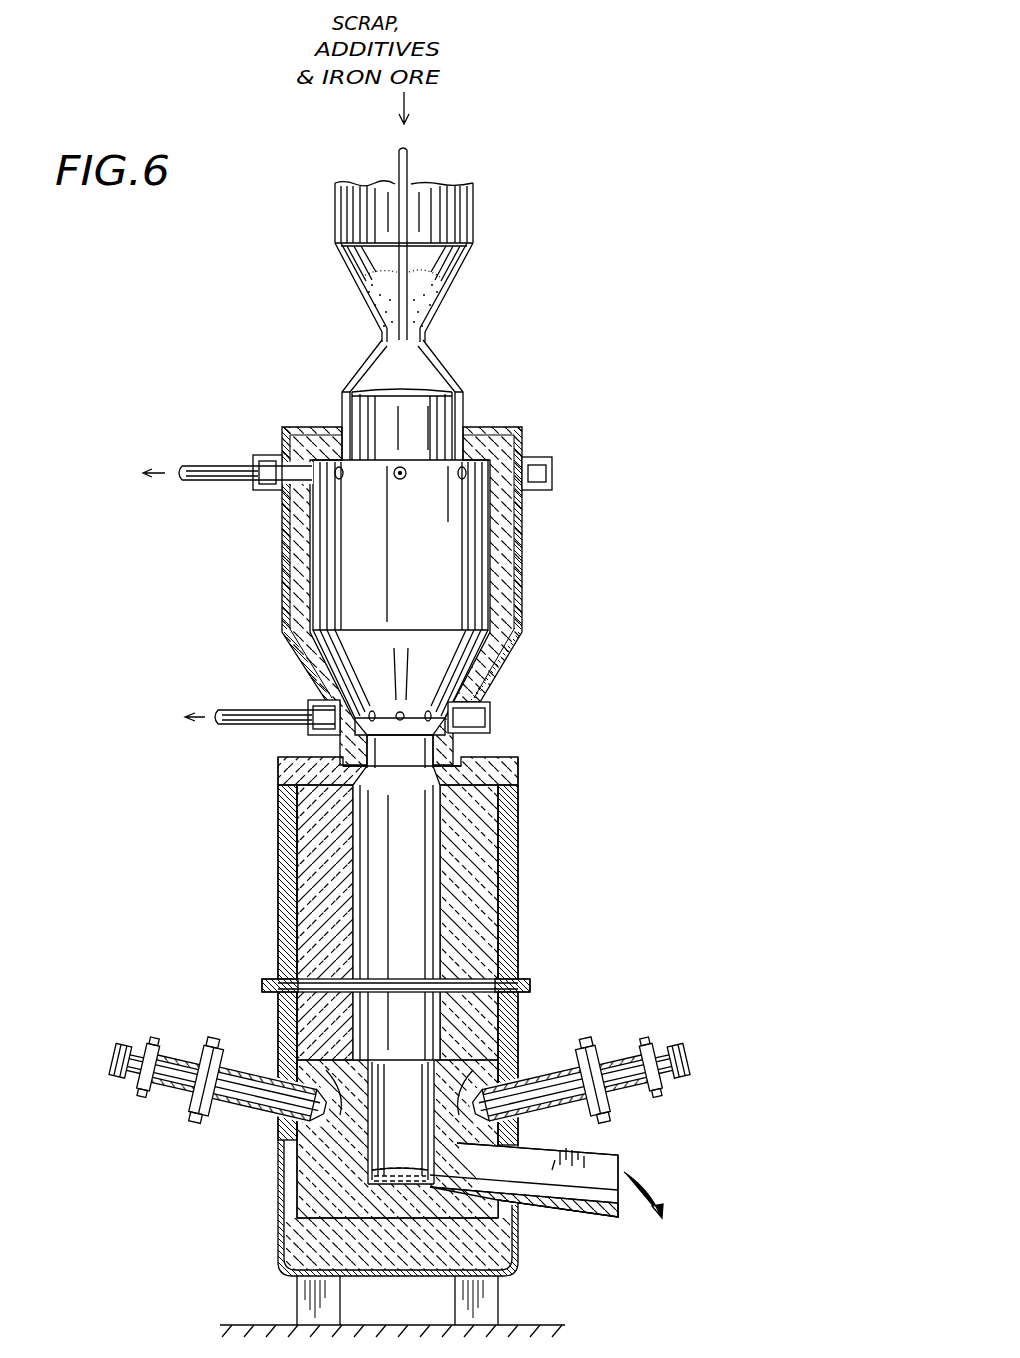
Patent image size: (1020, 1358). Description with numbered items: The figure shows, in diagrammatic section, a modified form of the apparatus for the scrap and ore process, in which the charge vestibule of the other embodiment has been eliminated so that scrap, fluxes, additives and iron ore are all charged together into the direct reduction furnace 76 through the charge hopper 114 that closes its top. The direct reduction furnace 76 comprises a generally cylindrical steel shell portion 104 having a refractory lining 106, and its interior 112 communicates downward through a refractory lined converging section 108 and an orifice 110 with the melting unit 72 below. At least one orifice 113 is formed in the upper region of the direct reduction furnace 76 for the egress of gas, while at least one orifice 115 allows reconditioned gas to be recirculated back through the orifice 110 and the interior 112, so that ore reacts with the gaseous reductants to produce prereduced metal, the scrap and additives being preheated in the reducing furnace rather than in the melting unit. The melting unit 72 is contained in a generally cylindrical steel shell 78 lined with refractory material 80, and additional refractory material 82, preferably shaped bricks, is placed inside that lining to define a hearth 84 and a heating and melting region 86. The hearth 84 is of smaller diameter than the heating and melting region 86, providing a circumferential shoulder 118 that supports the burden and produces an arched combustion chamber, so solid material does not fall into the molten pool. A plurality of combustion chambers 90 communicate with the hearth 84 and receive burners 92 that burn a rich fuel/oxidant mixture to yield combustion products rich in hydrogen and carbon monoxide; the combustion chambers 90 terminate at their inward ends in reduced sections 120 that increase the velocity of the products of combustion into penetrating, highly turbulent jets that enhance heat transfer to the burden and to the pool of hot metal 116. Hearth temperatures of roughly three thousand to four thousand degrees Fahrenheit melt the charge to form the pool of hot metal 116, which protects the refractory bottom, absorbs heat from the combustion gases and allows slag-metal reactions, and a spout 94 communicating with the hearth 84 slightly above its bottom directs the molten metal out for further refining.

The melting unit 72 is at (394, 1047).
The direct reduction furnace 76 is at (351, 597).
The cylindrical steel shell 78 is at (280, 919).
The refractory material 80 is at (288, 885).
The additional refractory material 82 is at (318, 940).
The hearth 84 is at (325, 1111).
The heating and melting region 86 is at (416, 886).
The combustion chambers 90 is at (246, 1116).
The burners 92 is at (140, 1062).
The spout 94 is at (612, 1147).
The cylindrical steel shell portion 104 is at (371, 596).
The refractory lining 106 is at (300, 540).
The refractory lined converging section 108 is at (296, 655).
The orifice 110 is at (410, 740).
The interior of the furnace 112 is at (352, 597).
The orifice for egress of gas 113 is at (262, 470).
The charge hopper 114 is at (436, 360).
The orifice for recirculated gas 115 is at (312, 731).
The pool of hot metal 116 is at (372, 1178).
The circumferential shoulder 118 is at (372, 1062).
The reduced sections 120 is at (300, 1063).